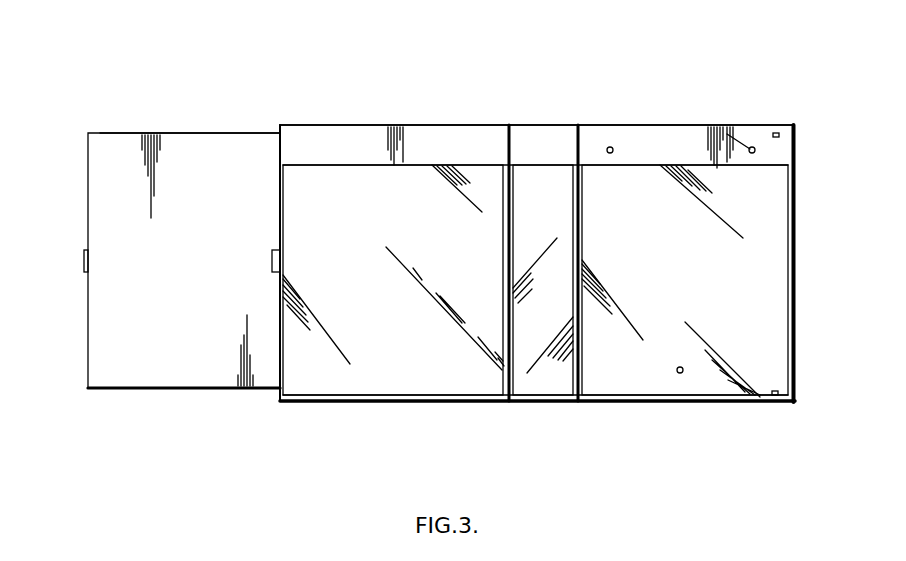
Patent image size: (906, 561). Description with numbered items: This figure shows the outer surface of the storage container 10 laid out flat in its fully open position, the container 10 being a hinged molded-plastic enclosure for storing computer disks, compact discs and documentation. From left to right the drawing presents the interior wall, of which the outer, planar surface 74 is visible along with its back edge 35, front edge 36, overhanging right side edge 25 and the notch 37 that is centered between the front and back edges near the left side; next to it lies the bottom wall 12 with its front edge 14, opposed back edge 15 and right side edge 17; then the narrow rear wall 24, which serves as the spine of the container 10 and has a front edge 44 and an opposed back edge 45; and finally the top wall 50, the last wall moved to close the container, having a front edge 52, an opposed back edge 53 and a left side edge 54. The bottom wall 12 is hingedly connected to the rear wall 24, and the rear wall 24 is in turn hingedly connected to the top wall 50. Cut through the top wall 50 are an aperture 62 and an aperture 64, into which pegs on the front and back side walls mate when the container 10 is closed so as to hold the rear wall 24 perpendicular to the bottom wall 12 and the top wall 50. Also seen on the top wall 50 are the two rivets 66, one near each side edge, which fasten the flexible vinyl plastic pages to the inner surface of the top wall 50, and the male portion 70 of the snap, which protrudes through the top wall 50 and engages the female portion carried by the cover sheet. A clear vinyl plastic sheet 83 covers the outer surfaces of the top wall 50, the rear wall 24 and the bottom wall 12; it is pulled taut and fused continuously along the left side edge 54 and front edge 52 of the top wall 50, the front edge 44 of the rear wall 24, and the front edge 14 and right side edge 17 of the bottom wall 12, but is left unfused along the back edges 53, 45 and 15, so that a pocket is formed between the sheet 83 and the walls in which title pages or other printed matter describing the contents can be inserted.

The storage container 10 is at (411, 100).
The bottom wall 12 is at (387, 137).
The front edge 14 is at (312, 402).
The back edge 15 is at (345, 125).
The right side edge 17 is at (280, 399).
The rear wall 24 is at (560, 140).
The right side edge 25 is at (88, 318).
The back edge 35 is at (122, 133).
The front edge 36 is at (222, 390).
The notch 37 is at (272, 258).
The front edge 44 is at (515, 402).
The back edge 45 is at (520, 126).
The top wall 50 is at (760, 136).
The front edge 52 is at (625, 402).
The back edge 53 is at (710, 125).
The left side edge 54 is at (796, 312).
The aperture 62 is at (770, 402).
The aperture 64 is at (780, 135).
The rivets 66 is at (612, 148).
The male portion of the snap 70 is at (678, 377).
The outer planar surface 74 is at (197, 262).
The clear vinyl plastic sheet 83 is at (398, 380).